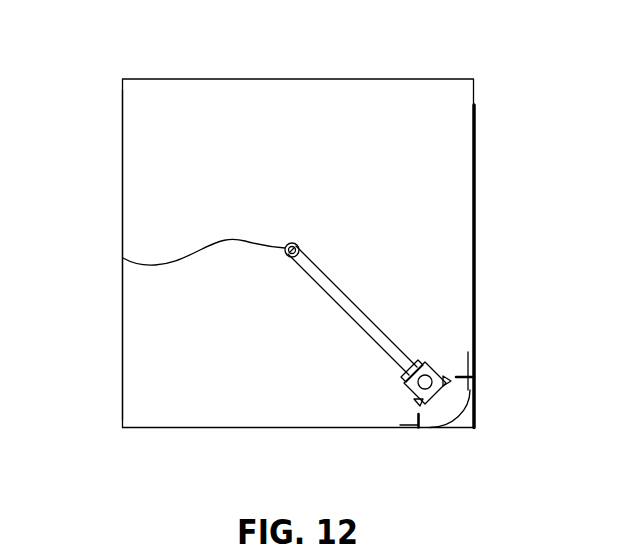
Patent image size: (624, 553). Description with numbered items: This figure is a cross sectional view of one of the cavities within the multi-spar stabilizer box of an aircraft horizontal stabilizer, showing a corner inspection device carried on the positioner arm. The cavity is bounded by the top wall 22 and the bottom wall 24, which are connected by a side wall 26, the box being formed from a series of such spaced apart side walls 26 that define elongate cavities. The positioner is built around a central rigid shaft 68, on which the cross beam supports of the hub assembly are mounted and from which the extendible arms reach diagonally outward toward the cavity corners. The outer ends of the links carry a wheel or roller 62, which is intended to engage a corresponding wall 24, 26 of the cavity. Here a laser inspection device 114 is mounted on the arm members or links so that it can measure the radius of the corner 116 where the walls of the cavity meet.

The top wall 22 is at (297, 79).
The bottom wall 24 is at (295, 428).
The side walls 26 is at (475, 187).
The central rigid shaft 68 is at (123, 258).
The laser inspection device 114 is at (446, 376).
The wheel or roller 62 is at (400, 425).
The corner 116 is at (486, 403).